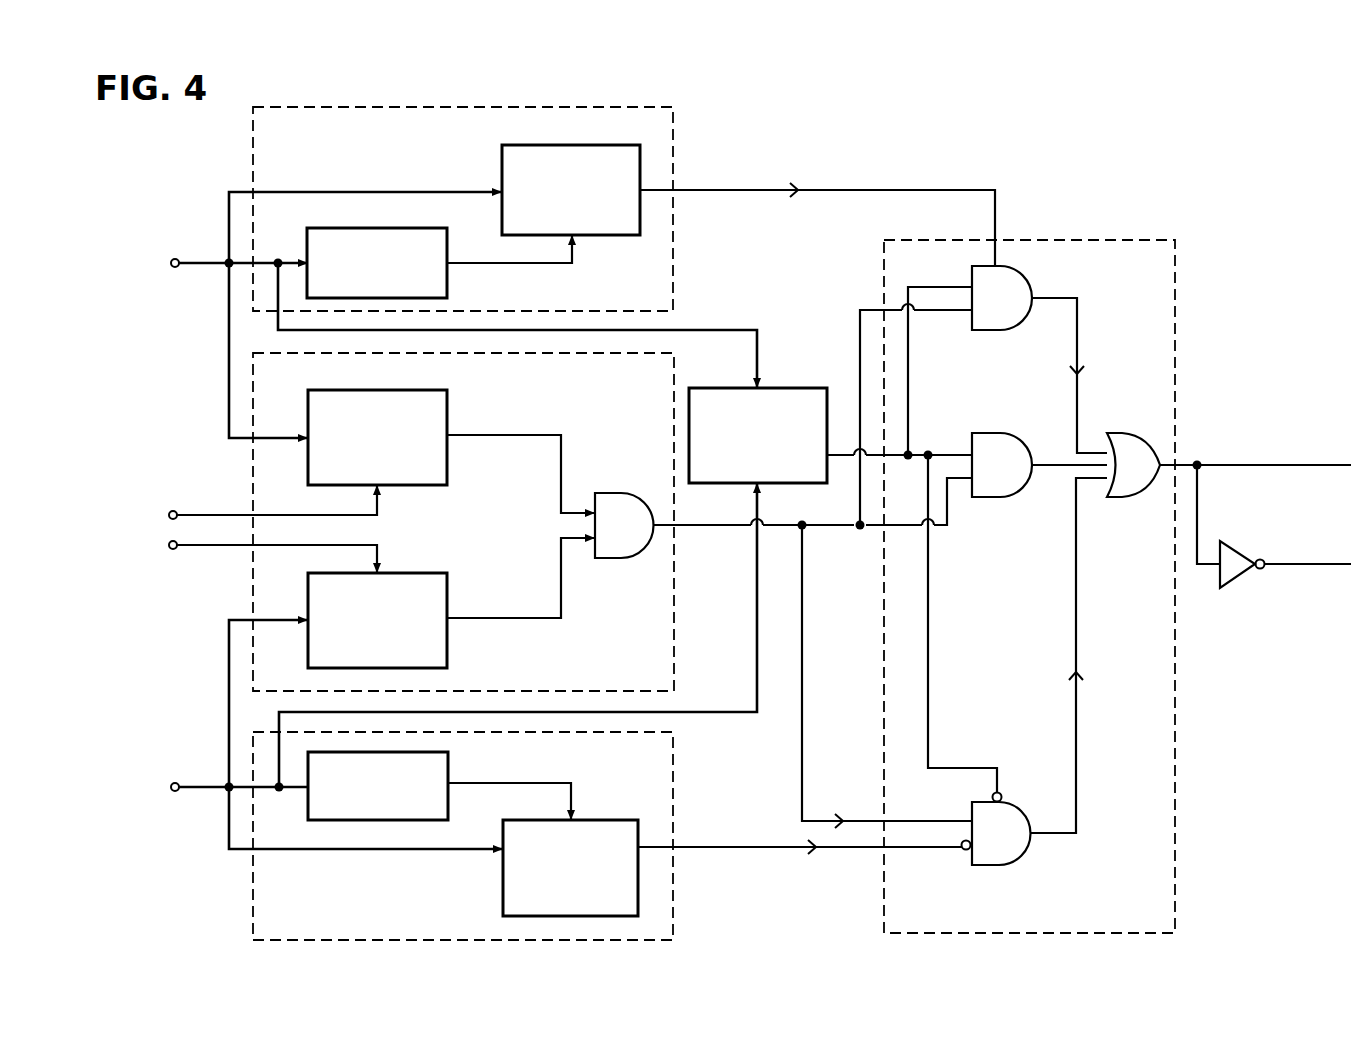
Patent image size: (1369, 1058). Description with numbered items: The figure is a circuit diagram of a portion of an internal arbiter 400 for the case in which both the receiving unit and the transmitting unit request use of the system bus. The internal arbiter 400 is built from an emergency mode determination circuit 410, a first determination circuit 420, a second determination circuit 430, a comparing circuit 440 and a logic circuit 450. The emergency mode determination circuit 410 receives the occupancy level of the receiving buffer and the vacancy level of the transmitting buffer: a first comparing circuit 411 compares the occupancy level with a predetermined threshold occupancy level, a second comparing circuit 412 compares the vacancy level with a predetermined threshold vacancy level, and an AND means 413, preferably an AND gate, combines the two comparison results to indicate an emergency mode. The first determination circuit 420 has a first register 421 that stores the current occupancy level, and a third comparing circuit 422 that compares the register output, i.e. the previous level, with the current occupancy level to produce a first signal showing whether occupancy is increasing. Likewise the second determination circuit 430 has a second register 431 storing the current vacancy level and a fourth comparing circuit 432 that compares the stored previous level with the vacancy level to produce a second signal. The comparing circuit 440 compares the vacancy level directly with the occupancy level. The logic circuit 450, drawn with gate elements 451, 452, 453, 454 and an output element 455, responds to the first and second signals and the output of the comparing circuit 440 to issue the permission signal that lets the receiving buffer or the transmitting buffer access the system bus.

The internal arbiter 400 is at (1232, 121).
The emergency mode determination circuit 410 is at (253, 574).
The first comparing circuit 411 is at (407, 390).
The second comparing circuit 412 is at (415, 573).
The AND means 413 is at (613, 492).
The first determination circuit 420 is at (253, 143).
The first register 421 is at (382, 228).
The third comparing circuit 422 is at (572, 144).
The second determination circuit 430 is at (253, 897).
The second register 431 is at (375, 822).
The fourth comparing circuit 432 is at (592, 820).
The comparing circuit 440 is at (788, 388).
The logic circuit 450 is at (1095, 237).
The first AND gate 451 is at (988, 332).
The second AND gate 452 is at (988, 498).
The NAND gate 453 is at (1013, 797).
The OR gate 454 is at (1117, 498).
The inverter 455 is at (1236, 580).